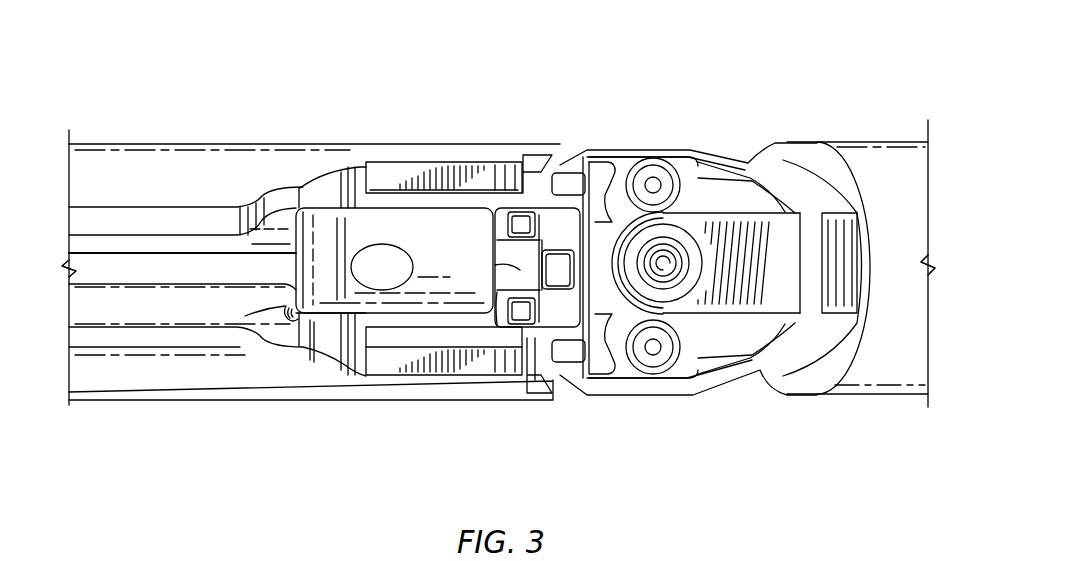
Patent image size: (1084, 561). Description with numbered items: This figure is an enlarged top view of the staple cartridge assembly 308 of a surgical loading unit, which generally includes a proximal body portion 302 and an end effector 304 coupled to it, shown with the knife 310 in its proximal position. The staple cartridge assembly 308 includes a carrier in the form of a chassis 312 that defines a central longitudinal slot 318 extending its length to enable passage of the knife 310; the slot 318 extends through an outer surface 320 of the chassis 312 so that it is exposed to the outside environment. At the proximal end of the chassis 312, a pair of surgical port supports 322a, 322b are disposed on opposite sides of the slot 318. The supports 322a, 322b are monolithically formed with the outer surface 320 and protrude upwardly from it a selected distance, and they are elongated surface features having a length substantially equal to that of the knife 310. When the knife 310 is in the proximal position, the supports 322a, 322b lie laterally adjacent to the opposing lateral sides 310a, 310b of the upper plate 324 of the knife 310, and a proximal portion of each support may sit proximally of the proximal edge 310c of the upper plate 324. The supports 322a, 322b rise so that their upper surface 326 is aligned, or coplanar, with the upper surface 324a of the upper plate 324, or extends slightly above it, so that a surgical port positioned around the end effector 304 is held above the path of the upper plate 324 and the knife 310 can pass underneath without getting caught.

The proximal body portion 302 is at (853, 128).
The end effector 304 is at (295, 122).
The staple cartridge assembly 308 is at (180, 146).
The knife 310 is at (502, 221).
The lateral side of upper plate 310a is at (455, 312).
The lateral side of upper plate 310b is at (435, 220).
The proximal edge of upper plate 310c is at (500, 265).
The chassis 312 is at (245, 148).
The central longitudinal slot 318 is at (155, 272).
The outer surface 320 is at (348, 185).
The surgical port support 322a is at (385, 376).
The surgical port support 322b is at (457, 162).
The upper plate 324 is at (317, 292).
The upper surface of upper plate 324a is at (352, 293).
The upper surface of supports 326 is at (502, 175).